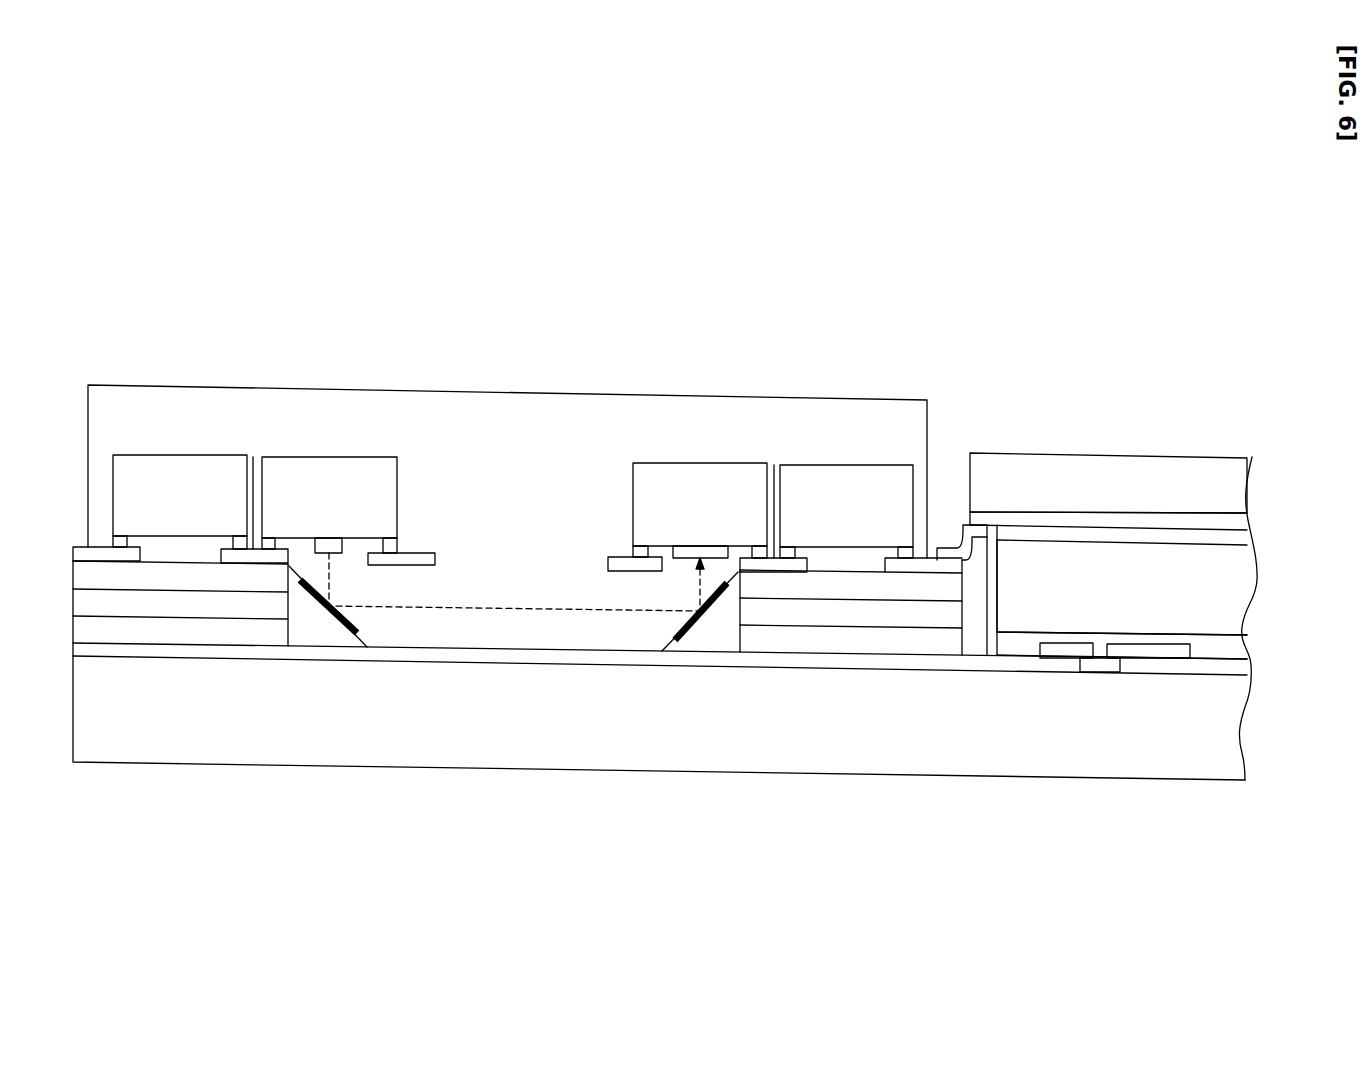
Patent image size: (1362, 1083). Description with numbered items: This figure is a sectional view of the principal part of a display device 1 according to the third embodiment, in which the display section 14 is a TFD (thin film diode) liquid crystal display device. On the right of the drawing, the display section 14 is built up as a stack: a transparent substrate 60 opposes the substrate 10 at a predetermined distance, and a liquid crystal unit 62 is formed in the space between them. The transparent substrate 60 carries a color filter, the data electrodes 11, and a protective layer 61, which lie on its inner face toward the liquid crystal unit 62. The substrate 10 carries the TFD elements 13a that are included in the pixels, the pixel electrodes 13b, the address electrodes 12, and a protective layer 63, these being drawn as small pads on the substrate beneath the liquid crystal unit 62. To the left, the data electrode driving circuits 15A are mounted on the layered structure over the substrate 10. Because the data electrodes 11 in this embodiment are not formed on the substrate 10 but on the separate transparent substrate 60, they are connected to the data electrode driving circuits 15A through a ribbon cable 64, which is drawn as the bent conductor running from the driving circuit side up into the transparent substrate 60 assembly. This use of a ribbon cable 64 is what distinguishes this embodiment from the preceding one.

The display device 1 is at (748, 333).
The substrate 10 is at (1203, 727).
The data electrodes 11 is at (1070, 520).
The address electrodes 12 is at (1047, 650).
The TFD elements 13a is at (1092, 667).
The pixel electrodes 13b is at (1158, 655).
The display section 14 is at (1142, 580).
The data electrode driving circuits 15A is at (865, 493).
The transparent substrate 60 is at (1208, 476).
The protective layer 61 is at (1225, 535).
The liquid crystal unit 62 is at (1222, 587).
The protective layer 63 is at (1223, 645).
The ribbon cable 64 is at (972, 530).